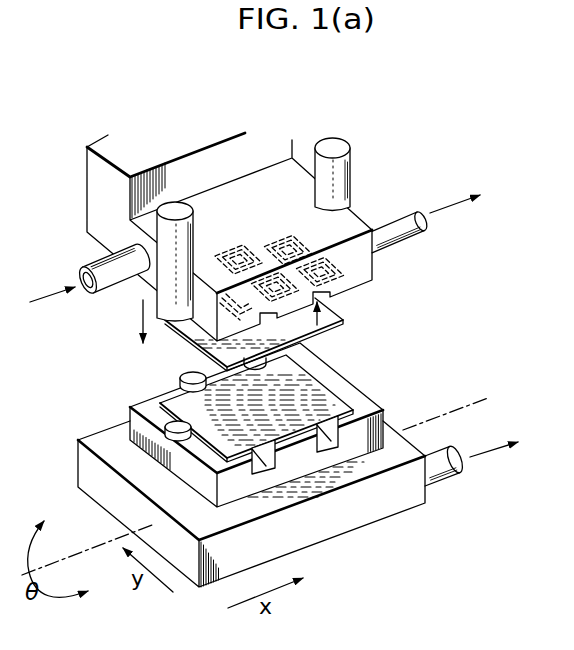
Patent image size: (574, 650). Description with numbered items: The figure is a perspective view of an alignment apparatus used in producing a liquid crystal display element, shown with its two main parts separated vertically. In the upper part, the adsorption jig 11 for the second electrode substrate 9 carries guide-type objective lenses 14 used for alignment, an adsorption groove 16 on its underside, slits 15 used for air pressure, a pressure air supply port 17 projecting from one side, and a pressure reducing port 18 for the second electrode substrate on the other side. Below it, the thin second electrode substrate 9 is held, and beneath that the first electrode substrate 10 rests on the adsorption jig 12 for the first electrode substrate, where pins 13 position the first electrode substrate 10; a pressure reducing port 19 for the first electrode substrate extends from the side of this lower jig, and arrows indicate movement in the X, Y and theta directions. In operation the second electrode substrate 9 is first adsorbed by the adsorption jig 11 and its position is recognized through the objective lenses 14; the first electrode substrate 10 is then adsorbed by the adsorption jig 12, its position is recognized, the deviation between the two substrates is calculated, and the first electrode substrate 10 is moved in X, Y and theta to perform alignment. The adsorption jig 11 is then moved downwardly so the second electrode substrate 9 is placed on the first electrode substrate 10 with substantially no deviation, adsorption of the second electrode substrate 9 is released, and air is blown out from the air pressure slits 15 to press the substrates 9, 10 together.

The second electrode substrate 9 is at (340, 318).
The first electrode substrate 10 is at (332, 393).
The adsorption jig for the second electrode substrate 11 is at (376, 270).
The adsorption jig for the first electrode substrate 12 is at (380, 425).
The pins for positioning the first electrode substrate 13 is at (170, 423).
The objective lenses 14 is at (352, 158).
The slits used for air pressure 15 is at (200, 275).
The adsorption groove 16 is at (302, 246).
The pressure air supply port 17 is at (82, 266).
The pressure reducing port for the second electrode substrate 18 is at (410, 207).
The pressure reducing port for the first electrode substrate 19 is at (452, 478).